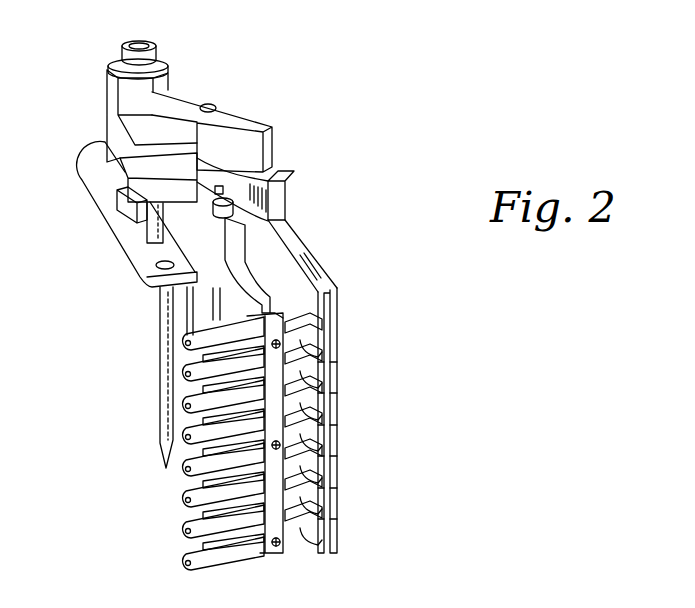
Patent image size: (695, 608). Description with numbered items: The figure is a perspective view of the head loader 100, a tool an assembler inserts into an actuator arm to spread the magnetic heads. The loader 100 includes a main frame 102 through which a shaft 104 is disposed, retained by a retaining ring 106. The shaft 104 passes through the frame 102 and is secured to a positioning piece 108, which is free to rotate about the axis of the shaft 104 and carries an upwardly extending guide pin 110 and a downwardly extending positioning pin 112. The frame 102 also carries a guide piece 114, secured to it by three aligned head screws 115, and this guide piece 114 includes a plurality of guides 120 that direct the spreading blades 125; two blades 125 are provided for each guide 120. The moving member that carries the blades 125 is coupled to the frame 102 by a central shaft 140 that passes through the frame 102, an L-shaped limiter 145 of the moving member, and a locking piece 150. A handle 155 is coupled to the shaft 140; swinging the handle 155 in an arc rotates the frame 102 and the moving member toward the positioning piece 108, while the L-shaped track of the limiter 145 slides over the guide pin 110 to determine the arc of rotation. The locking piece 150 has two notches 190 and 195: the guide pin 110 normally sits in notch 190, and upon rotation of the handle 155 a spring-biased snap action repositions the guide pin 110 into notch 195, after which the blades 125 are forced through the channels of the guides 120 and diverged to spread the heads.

The head loader 100 is at (312, 113).
The main frame 102 is at (168, 78).
The shaft 104 is at (157, 50).
The retaining ring 106 is at (108, 68).
The positioning piece 108 is at (91, 172).
The guide pin 110 is at (148, 238).
The positioning pin 112 is at (160, 365).
The guide piece 114 is at (278, 530).
The head screws 115 is at (278, 344).
The guides 120 is at (223, 443).
The spreading blades 125 is at (310, 386).
The central shaft 140 is at (216, 108).
The L-shaped limiter 145 is at (284, 205).
The locking piece 150 is at (117, 205).
The handle 155 is at (257, 124).
The notch 190 is at (150, 208).
The notch 195 is at (218, 190).